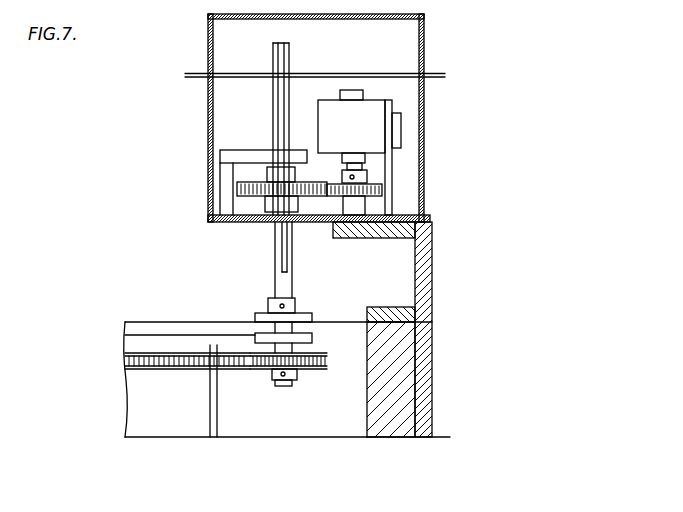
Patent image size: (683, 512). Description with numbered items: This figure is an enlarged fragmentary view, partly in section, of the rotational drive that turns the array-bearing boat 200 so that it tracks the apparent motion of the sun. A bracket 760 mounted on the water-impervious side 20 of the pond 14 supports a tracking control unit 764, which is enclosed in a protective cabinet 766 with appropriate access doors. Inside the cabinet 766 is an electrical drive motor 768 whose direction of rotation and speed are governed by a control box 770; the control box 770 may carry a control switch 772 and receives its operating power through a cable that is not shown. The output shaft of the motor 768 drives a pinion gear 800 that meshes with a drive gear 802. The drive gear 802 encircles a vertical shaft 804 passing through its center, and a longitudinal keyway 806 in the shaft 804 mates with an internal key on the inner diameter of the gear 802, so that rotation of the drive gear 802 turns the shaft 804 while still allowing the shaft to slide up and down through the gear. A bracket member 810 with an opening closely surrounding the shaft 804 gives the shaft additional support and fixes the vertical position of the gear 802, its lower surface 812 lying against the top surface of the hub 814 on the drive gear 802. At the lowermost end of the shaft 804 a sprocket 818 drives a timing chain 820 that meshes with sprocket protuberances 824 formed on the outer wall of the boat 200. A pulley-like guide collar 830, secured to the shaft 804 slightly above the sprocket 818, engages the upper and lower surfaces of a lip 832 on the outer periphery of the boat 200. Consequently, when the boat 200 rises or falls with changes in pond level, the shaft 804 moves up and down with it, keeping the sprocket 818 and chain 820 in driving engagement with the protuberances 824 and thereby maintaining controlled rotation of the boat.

The tracking control unit 764 is at (488, 35).
The protective cabinet 766 is at (208, 97).
The vertical shaft 804 is at (272, 88).
The longitudinal keyway 806 is at (283, 107).
The bracket member 810 is at (245, 152).
The lower surface 812 is at (233, 170).
The hub 814 is at (267, 177).
The drive gear 802 is at (237, 191).
The pinion gear 800 is at (382, 191).
The electrical drive motor 768 is at (370, 134).
The control box 770 is at (393, 112).
The control switch 772 is at (402, 130).
The bracket 760 is at (425, 267).
The pond 14 is at (427, 380).
The water-impervious side 20 is at (430, 418).
The lip 832 is at (243, 326).
The guide collar 830 is at (310, 315).
The boat 200 is at (205, 418).
The sprocket protuberances 824 is at (220, 357).
The timing chain 820 is at (233, 372).
The sprocket 818 is at (327, 360).